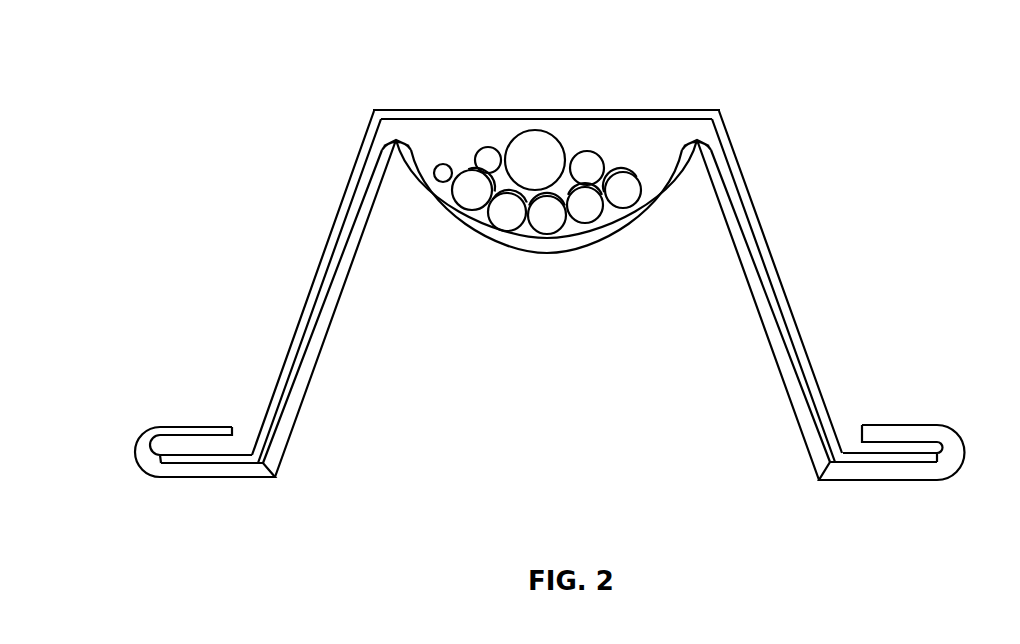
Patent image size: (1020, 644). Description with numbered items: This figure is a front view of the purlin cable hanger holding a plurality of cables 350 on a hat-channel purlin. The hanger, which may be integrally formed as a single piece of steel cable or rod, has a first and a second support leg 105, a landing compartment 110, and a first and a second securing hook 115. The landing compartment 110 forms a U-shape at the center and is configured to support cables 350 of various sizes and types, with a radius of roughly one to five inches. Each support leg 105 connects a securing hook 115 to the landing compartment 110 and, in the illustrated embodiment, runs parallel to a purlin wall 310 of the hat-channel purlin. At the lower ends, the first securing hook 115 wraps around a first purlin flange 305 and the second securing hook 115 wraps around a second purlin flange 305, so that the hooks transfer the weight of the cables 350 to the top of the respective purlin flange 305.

The support leg 105 is at (294, 418).
The landing compartment 110 is at (549, 250).
The securing hook 115 is at (134, 450).
The purlin flange 305 is at (245, 451).
The purlin wall 310 is at (329, 235).
The cables 350 is at (538, 153).